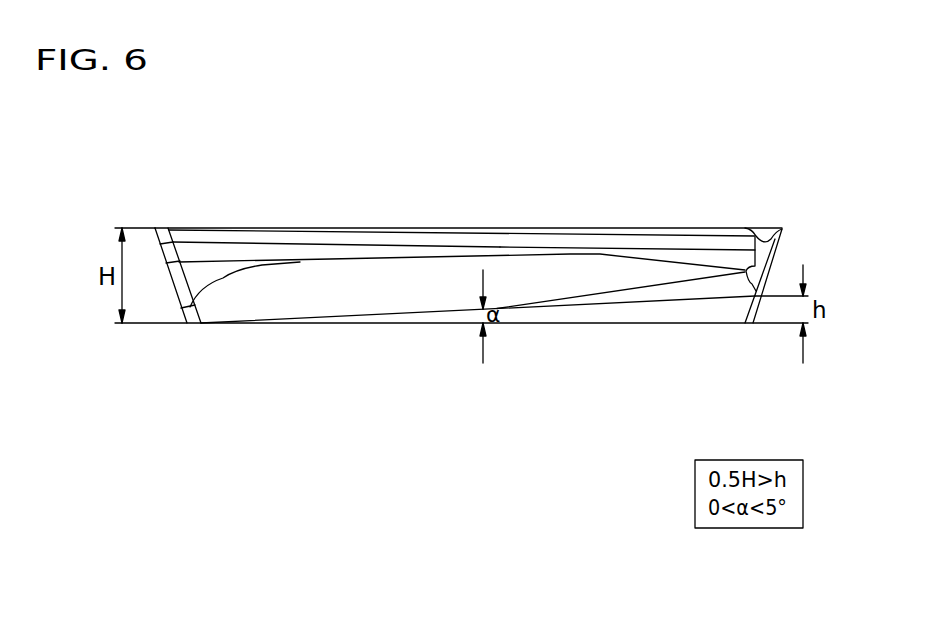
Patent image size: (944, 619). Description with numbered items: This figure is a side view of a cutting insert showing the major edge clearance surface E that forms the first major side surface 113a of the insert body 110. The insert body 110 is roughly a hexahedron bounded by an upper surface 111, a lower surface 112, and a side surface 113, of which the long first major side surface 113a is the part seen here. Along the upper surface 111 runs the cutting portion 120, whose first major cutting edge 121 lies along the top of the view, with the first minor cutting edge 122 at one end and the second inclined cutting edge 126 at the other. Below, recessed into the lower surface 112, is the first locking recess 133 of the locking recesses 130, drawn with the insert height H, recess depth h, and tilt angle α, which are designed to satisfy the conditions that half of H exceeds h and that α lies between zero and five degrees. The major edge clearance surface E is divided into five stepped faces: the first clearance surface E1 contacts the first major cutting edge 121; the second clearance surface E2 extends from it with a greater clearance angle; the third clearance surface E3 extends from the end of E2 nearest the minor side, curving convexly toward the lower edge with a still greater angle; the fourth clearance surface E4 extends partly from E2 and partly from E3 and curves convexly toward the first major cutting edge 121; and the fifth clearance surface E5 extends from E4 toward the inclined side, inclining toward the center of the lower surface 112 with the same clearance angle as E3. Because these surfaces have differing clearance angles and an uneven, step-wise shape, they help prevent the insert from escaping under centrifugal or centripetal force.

The insert body 110 is at (468, 196).
The upper surface 111 is at (598, 228).
The lower surface 112 is at (552, 324).
The side surface 113 is at (467, 328).
The first major side surface 113a is at (447, 284).
The cutting portion 120 is at (462, 199).
The first major cutting edge 121 is at (548, 230).
The first minor cutting edge 122 is at (155, 240).
The second inclined cutting edge 126 is at (784, 238).
The third member 130 is at (636, 353).
The first locking recess 133 is at (633, 316).
The major edge clearance surface E is at (464, 198).
The first clearance surface E1 is at (275, 236).
The second clearance surface E2 is at (233, 250).
The third clearance surface E3 is at (208, 285).
The fourth clearance surface E4 is at (373, 297).
The fifth clearance surface E5 is at (715, 287).